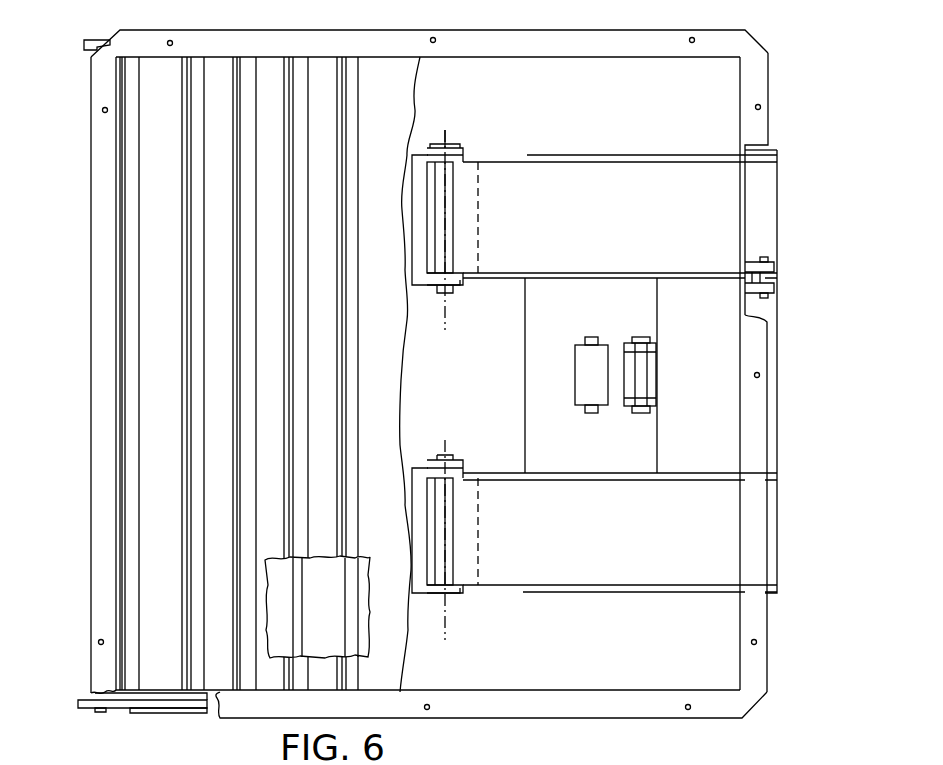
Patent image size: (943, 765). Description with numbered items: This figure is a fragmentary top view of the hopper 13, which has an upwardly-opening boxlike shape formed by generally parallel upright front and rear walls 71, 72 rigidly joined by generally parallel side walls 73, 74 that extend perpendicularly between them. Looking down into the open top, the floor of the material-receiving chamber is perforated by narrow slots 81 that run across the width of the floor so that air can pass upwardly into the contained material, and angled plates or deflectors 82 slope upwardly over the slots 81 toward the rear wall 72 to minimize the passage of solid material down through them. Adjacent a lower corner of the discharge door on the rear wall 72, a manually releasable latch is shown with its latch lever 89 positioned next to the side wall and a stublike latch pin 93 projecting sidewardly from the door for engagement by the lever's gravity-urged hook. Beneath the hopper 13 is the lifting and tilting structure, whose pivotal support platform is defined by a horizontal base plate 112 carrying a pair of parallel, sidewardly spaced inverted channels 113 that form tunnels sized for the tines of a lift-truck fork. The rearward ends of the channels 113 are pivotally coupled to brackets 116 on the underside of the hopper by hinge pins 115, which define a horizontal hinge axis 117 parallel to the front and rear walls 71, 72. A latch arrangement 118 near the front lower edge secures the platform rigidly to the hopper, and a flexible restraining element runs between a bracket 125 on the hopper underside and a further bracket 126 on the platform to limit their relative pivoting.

The hopper 13 is at (780, 118).
The front wall 71 is at (756, 626).
The rear wall 72 is at (98, 340).
The side wall 73 is at (533, 712).
The side wall 74 is at (604, 38).
The slots 81 is at (349, 633).
The deflectors 82 is at (350, 520).
The latch lever 89 is at (118, 712).
The latch pin 93 is at (100, 713).
The base plate 112 is at (540, 450).
The channels 113 is at (686, 175).
The hinge pins 115 is at (455, 178).
The brackets 116 is at (420, 150).
The hinge axis 117 is at (445, 377).
The latch arrangement 118 is at (788, 280).
The bracket 125 is at (583, 360).
The bracket 126 is at (652, 378).